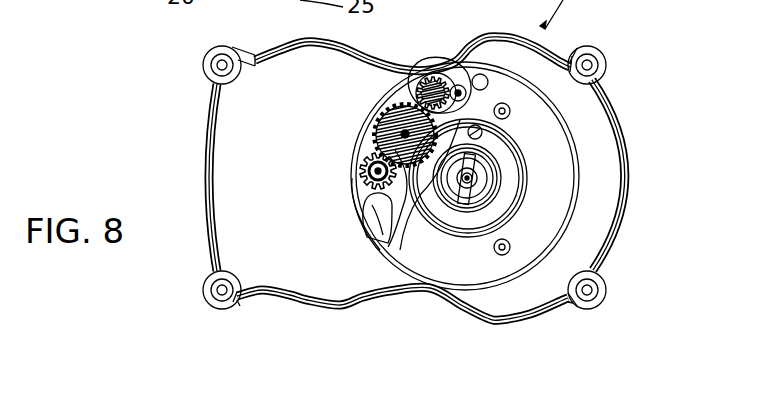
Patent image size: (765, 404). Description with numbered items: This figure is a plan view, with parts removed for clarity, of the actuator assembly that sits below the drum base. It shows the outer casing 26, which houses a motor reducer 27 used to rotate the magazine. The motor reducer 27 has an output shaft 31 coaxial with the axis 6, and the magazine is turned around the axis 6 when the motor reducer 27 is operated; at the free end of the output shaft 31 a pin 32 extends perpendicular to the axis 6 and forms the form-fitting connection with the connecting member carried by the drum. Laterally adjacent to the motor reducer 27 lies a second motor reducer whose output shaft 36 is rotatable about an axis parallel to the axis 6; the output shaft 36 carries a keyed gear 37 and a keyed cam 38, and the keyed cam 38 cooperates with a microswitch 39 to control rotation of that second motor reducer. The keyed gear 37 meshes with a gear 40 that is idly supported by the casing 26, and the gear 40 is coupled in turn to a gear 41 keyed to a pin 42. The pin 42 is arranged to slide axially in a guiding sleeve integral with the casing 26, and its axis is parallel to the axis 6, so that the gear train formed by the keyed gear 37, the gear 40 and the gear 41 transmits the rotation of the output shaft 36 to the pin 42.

The axis 6 is at (473, 178).
The outer casing 26 is at (618, 118).
The motor reducer 27 is at (393, 200).
The output shaft 31 is at (478, 167).
The pin 32 is at (460, 200).
The output shaft 36 is at (372, 173).
The keyed gear 37 is at (366, 163).
The keyed cam 38 is at (392, 193).
The microswitch 39 is at (372, 213).
The gear 40 is at (403, 103).
The gear 41 is at (425, 88).
The pin 42 is at (443, 90).